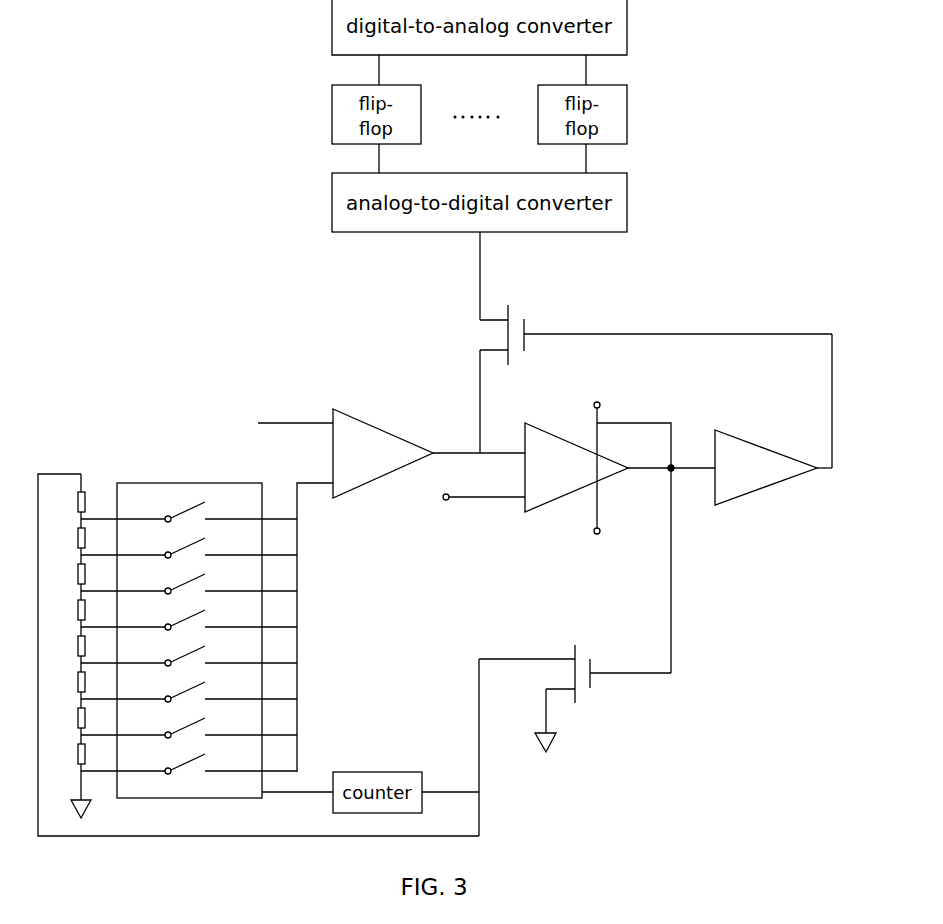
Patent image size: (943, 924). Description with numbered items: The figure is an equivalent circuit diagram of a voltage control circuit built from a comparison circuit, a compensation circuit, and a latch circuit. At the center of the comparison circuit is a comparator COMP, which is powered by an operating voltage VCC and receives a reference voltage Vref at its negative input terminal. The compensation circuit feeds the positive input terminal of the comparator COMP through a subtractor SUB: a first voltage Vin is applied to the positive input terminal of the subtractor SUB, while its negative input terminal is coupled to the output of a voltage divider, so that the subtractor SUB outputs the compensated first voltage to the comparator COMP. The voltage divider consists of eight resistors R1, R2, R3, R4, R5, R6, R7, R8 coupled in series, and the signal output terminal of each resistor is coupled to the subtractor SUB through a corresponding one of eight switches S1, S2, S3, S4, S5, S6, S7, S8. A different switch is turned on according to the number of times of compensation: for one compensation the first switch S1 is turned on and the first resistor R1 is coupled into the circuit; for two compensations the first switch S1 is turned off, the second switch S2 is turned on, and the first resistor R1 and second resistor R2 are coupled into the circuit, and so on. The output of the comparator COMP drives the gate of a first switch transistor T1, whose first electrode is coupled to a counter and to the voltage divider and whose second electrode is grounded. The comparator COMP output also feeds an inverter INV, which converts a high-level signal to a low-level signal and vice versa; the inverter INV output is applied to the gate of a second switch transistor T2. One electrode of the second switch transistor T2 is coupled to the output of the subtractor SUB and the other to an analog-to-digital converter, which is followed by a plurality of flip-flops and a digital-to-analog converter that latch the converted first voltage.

The first resistor R1 is at (66, 501).
The second resistor R2 is at (66, 537).
The resistor R3 is at (66, 573).
The resistor R4 is at (66, 609).
The resistor R5 is at (66, 645).
The resistor R6 is at (66, 681).
The resistor R7 is at (66, 717).
The resistor R8 is at (66, 753).
The first switch S1 is at (189, 508).
The second switch S2 is at (189, 544).
The switch S3 is at (189, 580).
The switch S4 is at (189, 616).
The switch S5 is at (189, 652).
The switch S6 is at (189, 688).
The switch S7 is at (189, 724).
The switch S8 is at (189, 760).
The first switch transistor T1 is at (575, 698).
The second switch transistor T2 is at (636, 335).
The subtractor SUB is at (383, 453).
The comparator COMP is at (576, 467).
The inverter INV is at (766, 467).
The first voltage Vin is at (279, 423).
The reference voltage Vref is at (461, 497).
The operating voltage VCC is at (597, 472).